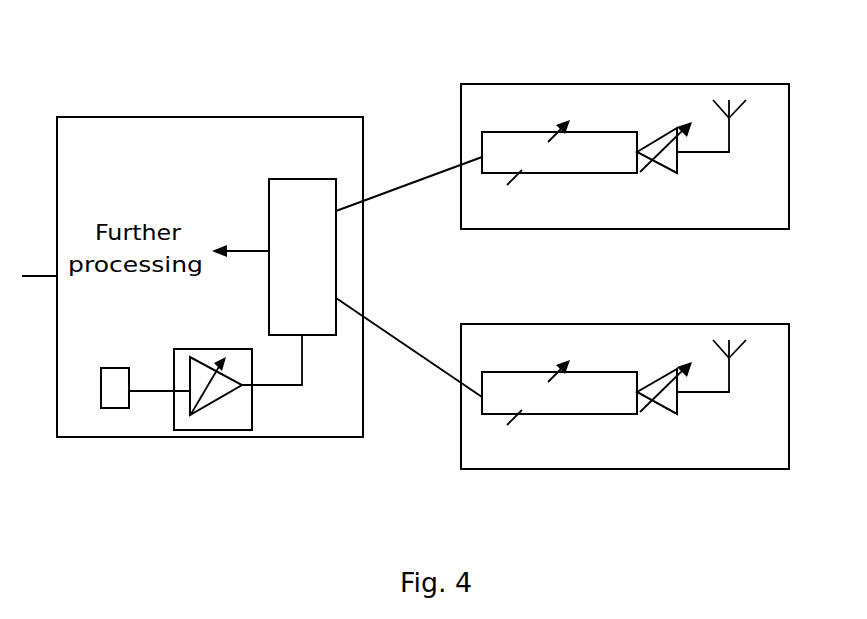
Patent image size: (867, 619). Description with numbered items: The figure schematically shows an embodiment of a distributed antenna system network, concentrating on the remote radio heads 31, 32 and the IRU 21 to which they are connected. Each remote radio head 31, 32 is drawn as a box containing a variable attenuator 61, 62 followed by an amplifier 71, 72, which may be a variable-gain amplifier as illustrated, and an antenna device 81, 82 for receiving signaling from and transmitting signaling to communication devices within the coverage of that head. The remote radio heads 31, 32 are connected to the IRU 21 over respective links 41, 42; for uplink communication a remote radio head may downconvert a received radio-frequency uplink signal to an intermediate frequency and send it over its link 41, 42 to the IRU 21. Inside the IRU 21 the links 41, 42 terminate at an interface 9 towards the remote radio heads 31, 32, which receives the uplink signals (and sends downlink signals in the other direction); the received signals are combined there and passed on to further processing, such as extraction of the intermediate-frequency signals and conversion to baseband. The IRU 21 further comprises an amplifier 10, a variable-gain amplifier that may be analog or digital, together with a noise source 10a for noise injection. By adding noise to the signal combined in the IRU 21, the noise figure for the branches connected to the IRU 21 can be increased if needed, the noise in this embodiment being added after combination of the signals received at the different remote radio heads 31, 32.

The IRU 21 is at (194, 129).
The interface 9 is at (306, 192).
The amplifier 10 is at (222, 430).
The noise source 10a is at (112, 408).
The link 41 is at (412, 182).
The link 42 is at (410, 345).
The remote radio head 31 is at (620, 102).
The remote radio head 32 is at (620, 342).
The variable attenuator 61 is at (590, 173).
The variable attenuator 62 is at (590, 414).
The amplifier 71 is at (668, 158).
The amplifier 72 is at (668, 398).
The antenna device 81 is at (730, 132).
The antenna device 82 is at (730, 372).